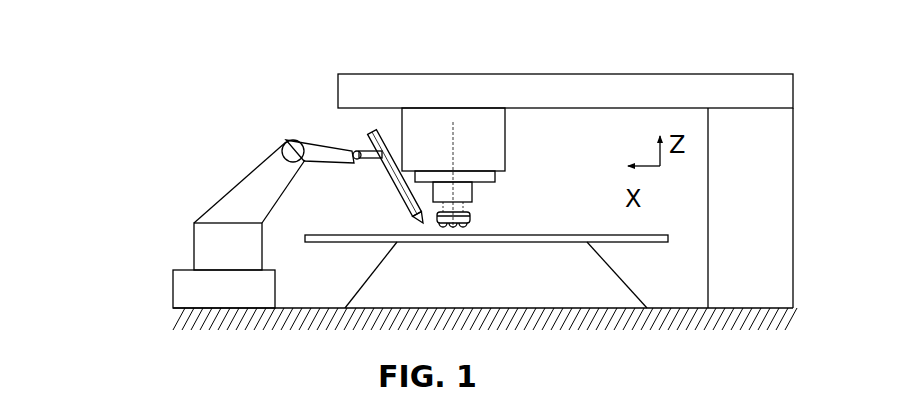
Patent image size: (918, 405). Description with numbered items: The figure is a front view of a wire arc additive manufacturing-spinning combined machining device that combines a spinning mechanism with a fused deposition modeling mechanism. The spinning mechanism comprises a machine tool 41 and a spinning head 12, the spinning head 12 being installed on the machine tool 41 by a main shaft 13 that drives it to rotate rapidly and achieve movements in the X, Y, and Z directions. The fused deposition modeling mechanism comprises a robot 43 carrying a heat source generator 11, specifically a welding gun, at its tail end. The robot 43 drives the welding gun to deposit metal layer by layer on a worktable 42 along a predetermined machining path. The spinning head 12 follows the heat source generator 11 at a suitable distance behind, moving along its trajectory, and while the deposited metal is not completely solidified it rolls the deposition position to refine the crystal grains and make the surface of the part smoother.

The machine tool 41 is at (427, 161).
The main shaft 13 is at (283, 143).
The heat source generator 11 is at (242, 161).
The robot 43 is at (168, 225).
The spinning head 12 is at (266, 245).
The worktable 42 is at (365, 276).